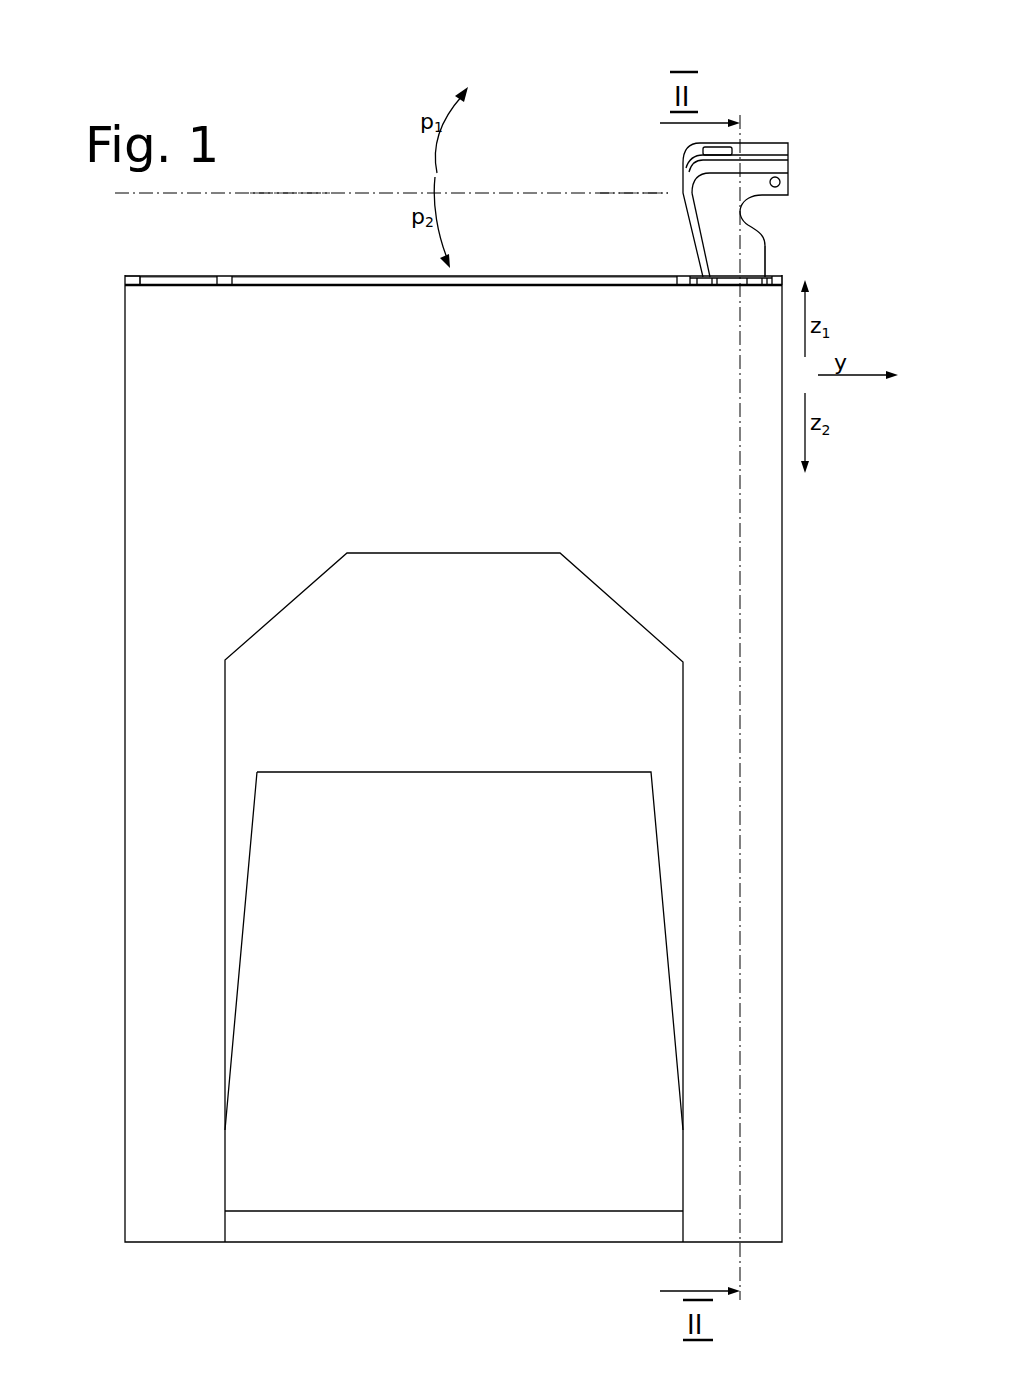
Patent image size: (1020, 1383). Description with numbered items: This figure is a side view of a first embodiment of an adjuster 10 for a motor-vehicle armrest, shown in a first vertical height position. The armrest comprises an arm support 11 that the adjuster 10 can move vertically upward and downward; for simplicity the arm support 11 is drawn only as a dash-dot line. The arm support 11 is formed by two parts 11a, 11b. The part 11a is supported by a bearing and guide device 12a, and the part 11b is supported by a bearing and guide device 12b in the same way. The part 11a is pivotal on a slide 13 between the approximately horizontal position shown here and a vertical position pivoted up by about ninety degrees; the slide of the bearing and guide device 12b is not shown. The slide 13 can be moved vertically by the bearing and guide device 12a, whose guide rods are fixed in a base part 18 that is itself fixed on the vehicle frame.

The adjuster 10 is at (768, 92).
The arm support 11 is at (492, 175).
The part of the arm support 11a is at (607, 193).
The part of the arm support 11b is at (287, 193).
The bearing and guide device 12a is at (793, 218).
The bearing and guide device 12b is at (128, 252).
The slide 13 is at (762, 266).
The base part 18 is at (152, 577).